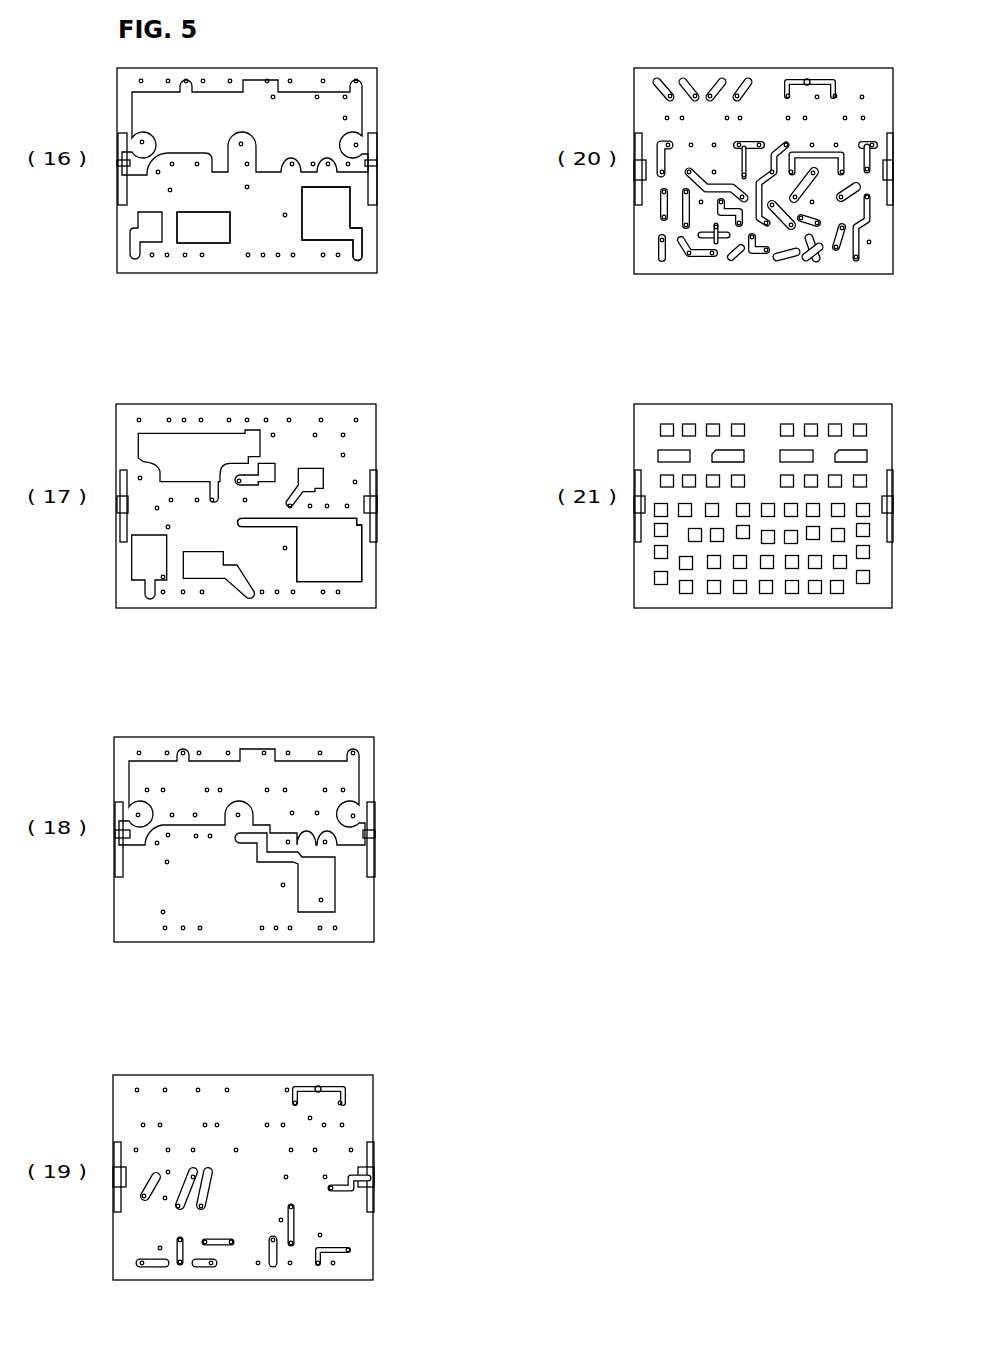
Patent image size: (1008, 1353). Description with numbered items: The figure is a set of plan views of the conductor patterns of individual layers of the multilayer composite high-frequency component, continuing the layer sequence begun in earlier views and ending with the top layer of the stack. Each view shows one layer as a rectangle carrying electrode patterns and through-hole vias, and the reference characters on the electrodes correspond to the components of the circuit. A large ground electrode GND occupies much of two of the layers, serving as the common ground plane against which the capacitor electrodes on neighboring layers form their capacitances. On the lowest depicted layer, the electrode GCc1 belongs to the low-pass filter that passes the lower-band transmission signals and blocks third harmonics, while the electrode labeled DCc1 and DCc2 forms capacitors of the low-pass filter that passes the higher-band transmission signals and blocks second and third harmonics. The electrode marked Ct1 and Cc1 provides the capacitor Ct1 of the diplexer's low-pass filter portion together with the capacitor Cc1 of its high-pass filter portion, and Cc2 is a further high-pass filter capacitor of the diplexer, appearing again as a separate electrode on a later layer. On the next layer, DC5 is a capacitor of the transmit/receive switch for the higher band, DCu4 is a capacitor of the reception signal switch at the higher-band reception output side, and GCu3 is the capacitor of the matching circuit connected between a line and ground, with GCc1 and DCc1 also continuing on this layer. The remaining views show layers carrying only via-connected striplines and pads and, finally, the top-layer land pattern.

The ground electrode GND is at (228, 125).
The capacitor GCc1 is at (155, 237).
The capacitor DCc1 is at (210, 238).
The capacitor DCc2 is at (205, 268).
The capacitor Ct1 is at (333, 235).
The capacitor Cc1 is at (345, 546).
The capacitor Cc2 is at (345, 569).
The capacitor DC5 is at (208, 464).
The capacitor DCu4 is at (282, 454).
The capacitor GCu3 is at (323, 470).